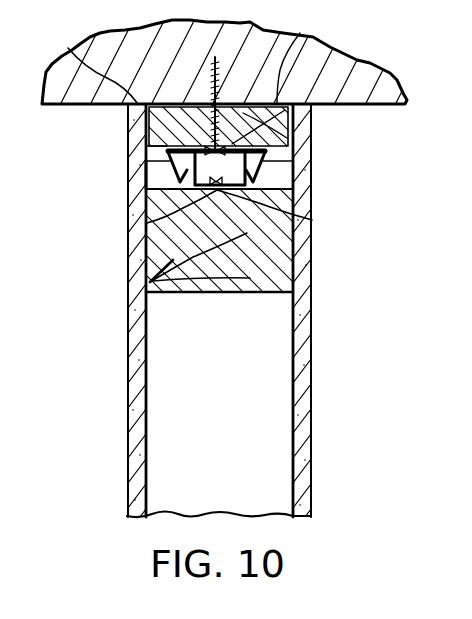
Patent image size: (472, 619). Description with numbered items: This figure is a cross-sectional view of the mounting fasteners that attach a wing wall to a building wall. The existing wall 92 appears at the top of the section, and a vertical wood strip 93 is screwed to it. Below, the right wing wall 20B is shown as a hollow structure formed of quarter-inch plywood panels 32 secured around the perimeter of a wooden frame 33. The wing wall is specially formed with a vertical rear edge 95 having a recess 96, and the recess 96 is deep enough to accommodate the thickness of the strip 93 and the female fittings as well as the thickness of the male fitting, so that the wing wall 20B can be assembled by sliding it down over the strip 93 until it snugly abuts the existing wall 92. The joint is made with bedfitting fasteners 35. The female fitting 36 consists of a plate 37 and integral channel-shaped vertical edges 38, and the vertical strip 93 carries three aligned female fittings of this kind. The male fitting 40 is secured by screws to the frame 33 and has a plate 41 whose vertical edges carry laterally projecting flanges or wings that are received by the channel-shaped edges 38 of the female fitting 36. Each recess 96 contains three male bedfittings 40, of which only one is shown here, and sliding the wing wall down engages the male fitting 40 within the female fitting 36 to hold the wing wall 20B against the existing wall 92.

The right wing wall 20B is at (311, 409).
The plywood panels 32 is at (128, 350).
The wooden frame 33 is at (263, 295).
The bedfitting fasteners 35 is at (273, 182).
The female fitting 36 is at (268, 155).
The plate 37 is at (290, 133).
The channel-shaped vertical edges 38 is at (145, 161).
The male fitting 40 is at (147, 223).
The plate 41 is at (312, 220).
The existing wall 92 is at (363, 62).
The vertical wood strips 93 is at (300, 33).
The vertical rear edges 95 is at (72, 54).
The recesses 96 is at (152, 173).